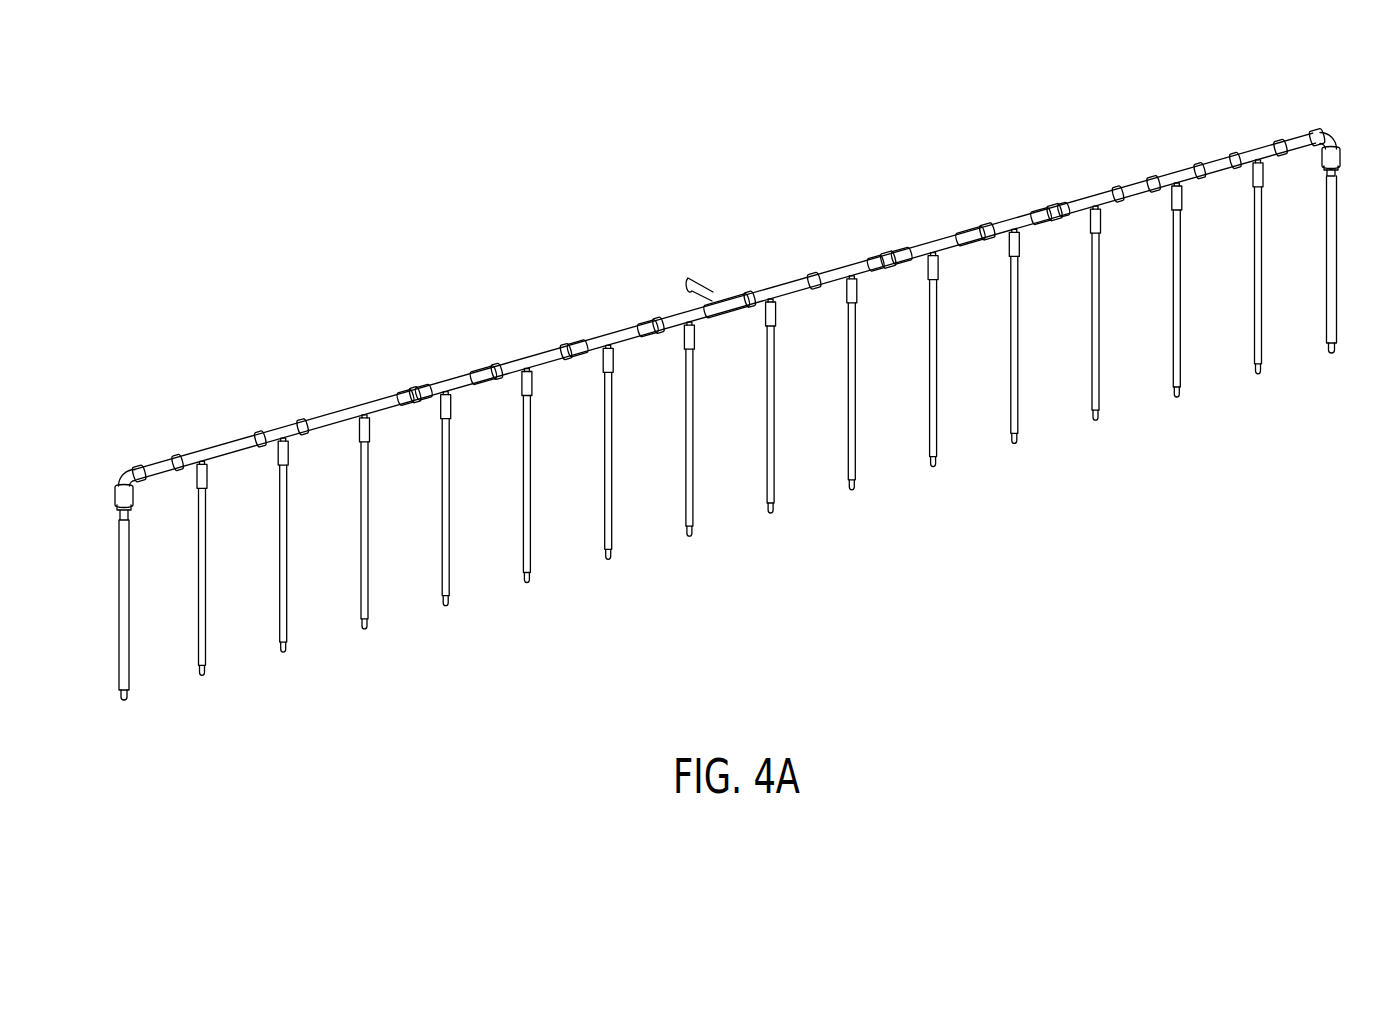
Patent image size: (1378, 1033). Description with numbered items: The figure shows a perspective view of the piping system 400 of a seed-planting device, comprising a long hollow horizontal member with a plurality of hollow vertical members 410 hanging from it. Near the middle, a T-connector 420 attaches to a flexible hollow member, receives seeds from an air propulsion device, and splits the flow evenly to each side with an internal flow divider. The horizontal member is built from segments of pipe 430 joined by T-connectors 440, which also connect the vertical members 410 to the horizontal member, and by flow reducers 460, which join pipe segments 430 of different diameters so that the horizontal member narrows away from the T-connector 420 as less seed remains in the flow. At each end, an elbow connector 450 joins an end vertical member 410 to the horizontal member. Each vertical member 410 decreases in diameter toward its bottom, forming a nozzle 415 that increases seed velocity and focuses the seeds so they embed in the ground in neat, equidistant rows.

The piping system 400 is at (708, 117).
The vertical member 410 is at (120, 636).
The nozzle 415 is at (129, 701).
The T-connector 420 is at (713, 283).
The segment of pipe 430 is at (484, 372).
The T-connector 440 is at (661, 319).
The elbow connector 450 is at (120, 471).
The flow reducer 460 is at (412, 392).